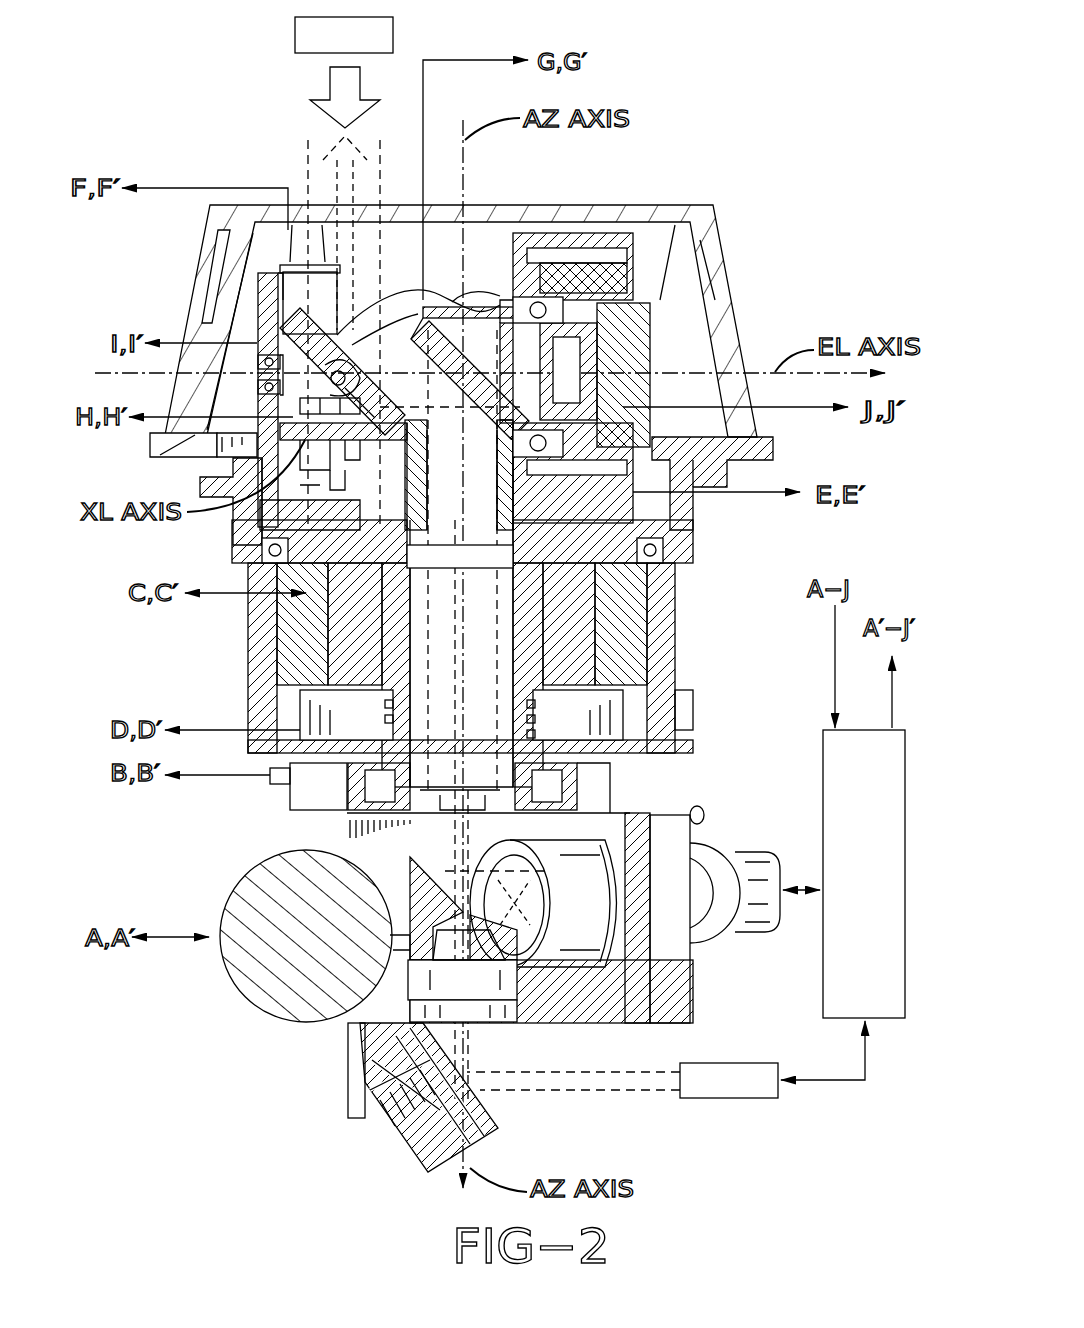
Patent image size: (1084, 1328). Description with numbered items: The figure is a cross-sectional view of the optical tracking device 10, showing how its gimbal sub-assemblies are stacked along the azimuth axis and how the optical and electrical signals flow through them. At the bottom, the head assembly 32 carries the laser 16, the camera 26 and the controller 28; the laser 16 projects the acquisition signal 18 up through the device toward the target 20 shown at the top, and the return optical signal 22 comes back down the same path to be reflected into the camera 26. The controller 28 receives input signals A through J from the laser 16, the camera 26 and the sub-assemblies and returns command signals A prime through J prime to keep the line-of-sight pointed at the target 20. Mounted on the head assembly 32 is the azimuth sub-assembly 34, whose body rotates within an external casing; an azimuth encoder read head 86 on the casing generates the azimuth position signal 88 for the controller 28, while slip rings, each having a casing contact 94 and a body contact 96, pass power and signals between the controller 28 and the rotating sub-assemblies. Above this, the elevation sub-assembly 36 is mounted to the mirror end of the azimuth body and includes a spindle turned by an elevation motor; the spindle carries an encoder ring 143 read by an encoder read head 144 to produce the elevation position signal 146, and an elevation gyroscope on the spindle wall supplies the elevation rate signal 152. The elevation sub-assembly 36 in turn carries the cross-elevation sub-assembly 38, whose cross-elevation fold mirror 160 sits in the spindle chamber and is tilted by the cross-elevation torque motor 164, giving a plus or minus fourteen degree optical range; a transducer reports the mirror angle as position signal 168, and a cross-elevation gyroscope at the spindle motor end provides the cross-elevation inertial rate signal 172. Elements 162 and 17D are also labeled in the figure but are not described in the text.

The optical tracking device 10 is at (190, 1042).
The laser 16 is at (745, 1100).
The acquisition signal 18 is at (337, 143).
The target 20 is at (295, 40).
The return optical signal 22 is at (330, 80).
The camera 26 is at (707, 918).
The controller 28 is at (823, 940).
The head assembly 32 is at (220, 883).
The azimuth sub-assembly 34 is at (230, 648).
The elevation sub-assembly 36 is at (676, 345).
The cross-elevation sub-assembly 38 is at (312, 392).
The azimuth encoder read head 86 is at (318, 797).
The azimuth position signal 88 is at (257, 780).
The casing contact 94 is at (535, 718).
The body contact 96 is at (627, 620).
The encoder ring 143 is at (300, 300).
The encoder read head 144 is at (328, 262).
The elevation position signal 146 is at (190, 190).
The elevation rate signal 152 is at (470, 60).
The cross-elevation fold mirror 160 is at (305, 362).
The mirror housing wall 162 is at (270, 320).
The cross-elevation torque motor 164 is at (300, 405).
The position signal 168 is at (262, 365).
The cross-elevation inertial rate signal 172 is at (790, 412).
The drive block 17D is at (652, 305).